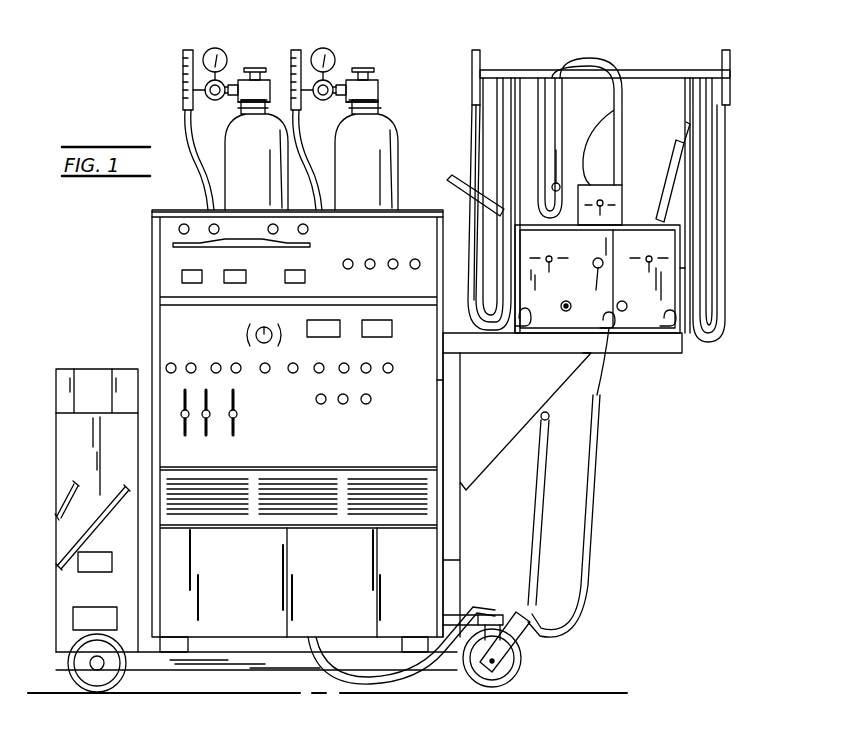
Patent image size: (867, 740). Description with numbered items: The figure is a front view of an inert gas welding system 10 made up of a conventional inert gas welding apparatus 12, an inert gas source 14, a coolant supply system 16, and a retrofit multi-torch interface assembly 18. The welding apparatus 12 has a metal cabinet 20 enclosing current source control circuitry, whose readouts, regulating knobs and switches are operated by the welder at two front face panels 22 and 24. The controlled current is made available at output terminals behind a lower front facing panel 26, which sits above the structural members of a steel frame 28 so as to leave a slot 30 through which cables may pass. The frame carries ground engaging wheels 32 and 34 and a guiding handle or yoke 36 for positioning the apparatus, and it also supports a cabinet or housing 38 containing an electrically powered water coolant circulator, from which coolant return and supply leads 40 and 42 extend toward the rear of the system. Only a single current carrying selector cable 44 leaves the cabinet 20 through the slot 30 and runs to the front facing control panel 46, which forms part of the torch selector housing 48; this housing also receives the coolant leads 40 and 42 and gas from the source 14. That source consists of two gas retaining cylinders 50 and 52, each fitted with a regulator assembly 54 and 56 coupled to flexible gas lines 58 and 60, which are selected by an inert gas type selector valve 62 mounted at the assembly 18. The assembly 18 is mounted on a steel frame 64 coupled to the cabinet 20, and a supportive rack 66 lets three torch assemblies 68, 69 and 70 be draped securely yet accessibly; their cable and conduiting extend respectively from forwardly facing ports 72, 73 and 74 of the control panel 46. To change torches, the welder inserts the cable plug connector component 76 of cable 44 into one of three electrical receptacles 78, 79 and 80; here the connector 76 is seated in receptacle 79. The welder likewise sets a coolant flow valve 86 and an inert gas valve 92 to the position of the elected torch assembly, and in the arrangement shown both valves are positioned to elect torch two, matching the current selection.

The inert gas welding system 10 is at (480, 22).
The inert gas welding apparatus 12 is at (125, 305).
The inert gas source 14 is at (284, 50).
The coolant supply system 16 is at (72, 356).
The multi-torch interface assembly 18 is at (663, 174).
The metal cabinet 20 is at (158, 347).
The front face panel 22 is at (445, 391).
The front face panel 24 is at (440, 216).
The lower front facing panel 26 is at (437, 590).
The steel frame 28 is at (232, 668).
The slot 30 is at (306, 652).
The ground engaging wheel 32 is at (104, 688).
The ground engaging wheel 34 is at (503, 678).
The guiding handle or yoke 36 is at (550, 414).
The cabinet or housing 38 is at (75, 442).
The coolant return lead 40 is at (60, 497).
The coolant supply lead 42 is at (70, 541).
The selector cable 44 is at (585, 487).
The control panel 46 is at (690, 258).
The torch selector housing 48 is at (682, 278).
The gas retaining cylinder 50 is at (257, 67).
The gas retaining cylinder 52 is at (372, 72).
The regulator assembly 54 is at (215, 48).
The regulator assembly 56 is at (333, 52).
The flexible gas line 58 is at (206, 185).
The flexible gas line 60 is at (300, 128).
The inert gas type selector valve 62 is at (619, 198).
The steel frame 64 is at (658, 353).
The supportive rack 66 is at (668, 70).
The torch assembly 68 is at (503, 70).
The torch assembly 69 is at (604, 68).
The torch assembly 70 is at (706, 70).
The port 72 is at (530, 292).
The port 73 is at (609, 336).
The port 74 is at (672, 301).
The cable plug connector component 76 is at (602, 245).
The electrical receptacle 78 is at (565, 303).
The electrical receptacle 79 is at (646, 253).
The electrical receptacle 80 is at (626, 303).
The coolant flow valve 86 is at (548, 258).
The inert gas valve 92 is at (652, 262).